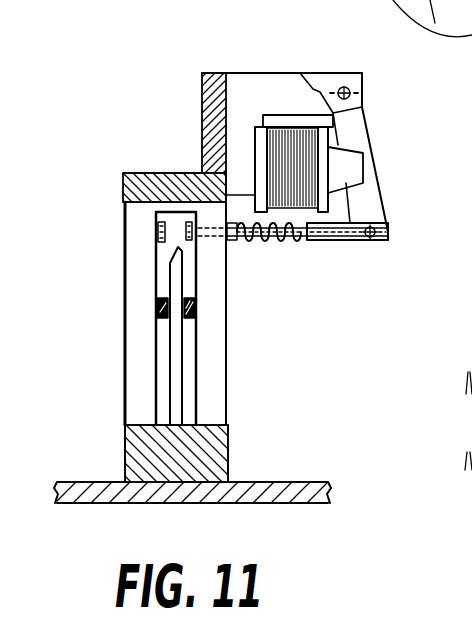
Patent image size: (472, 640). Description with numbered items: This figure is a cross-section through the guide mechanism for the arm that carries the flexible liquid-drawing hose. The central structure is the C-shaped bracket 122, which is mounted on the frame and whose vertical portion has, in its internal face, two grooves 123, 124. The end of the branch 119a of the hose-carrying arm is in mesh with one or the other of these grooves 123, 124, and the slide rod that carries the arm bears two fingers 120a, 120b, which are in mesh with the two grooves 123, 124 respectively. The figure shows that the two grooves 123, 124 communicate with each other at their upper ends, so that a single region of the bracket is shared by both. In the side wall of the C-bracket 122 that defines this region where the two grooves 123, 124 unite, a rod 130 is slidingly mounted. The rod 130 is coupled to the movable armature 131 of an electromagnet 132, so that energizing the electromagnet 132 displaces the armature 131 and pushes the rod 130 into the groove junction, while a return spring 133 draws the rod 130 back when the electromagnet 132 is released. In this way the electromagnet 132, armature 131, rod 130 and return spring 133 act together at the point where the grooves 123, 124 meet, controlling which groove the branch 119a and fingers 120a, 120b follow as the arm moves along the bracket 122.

The branch 119a is at (188, 242).
The finger 120a is at (196, 307).
The finger 120b is at (157, 307).
The C-shaped bracket 122 is at (125, 235).
The groove 123 is at (183, 378).
The groove 124 is at (160, 355).
The rod 130 is at (332, 247).
The movable armature 131 is at (372, 200).
The electromagnet 132 is at (282, 116).
The return spring 133 is at (288, 242).